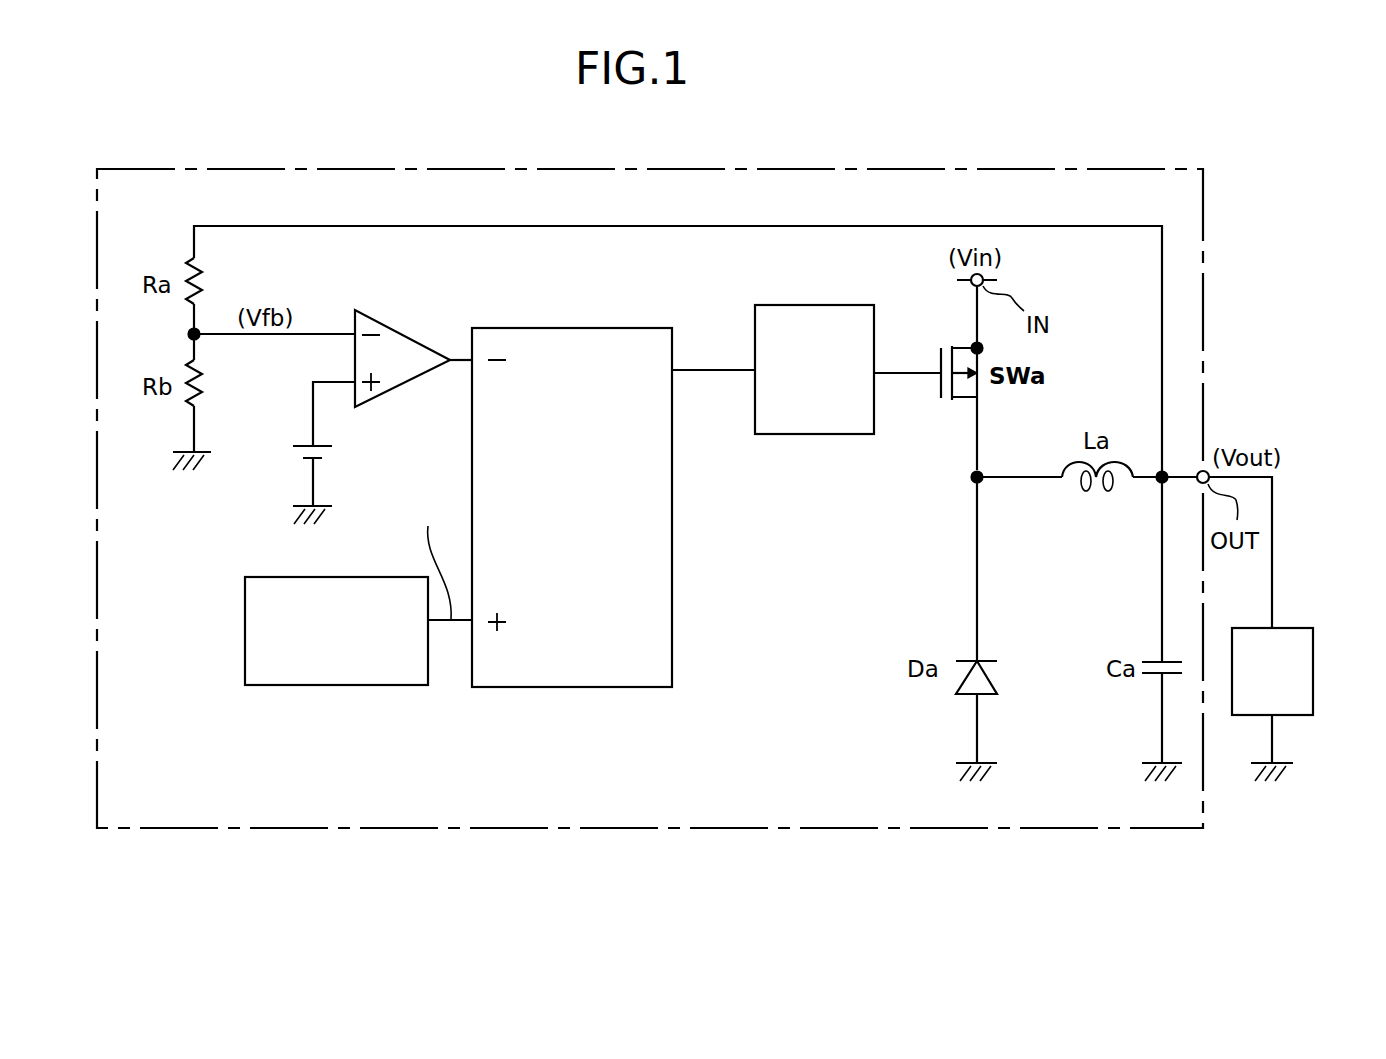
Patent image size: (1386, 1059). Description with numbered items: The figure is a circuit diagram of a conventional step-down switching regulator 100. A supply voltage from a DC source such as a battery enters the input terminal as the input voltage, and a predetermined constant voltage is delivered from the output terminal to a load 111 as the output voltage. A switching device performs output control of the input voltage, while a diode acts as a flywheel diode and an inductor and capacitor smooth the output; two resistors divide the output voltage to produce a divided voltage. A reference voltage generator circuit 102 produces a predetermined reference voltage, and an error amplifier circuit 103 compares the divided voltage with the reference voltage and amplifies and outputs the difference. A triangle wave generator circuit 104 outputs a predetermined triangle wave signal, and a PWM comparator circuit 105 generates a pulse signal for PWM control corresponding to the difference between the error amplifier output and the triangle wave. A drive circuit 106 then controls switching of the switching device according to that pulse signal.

The step-down switching regulator 100 is at (998, 170).
The reference voltage generator circuit 102 is at (303, 450).
The error amplifier circuit 103 is at (386, 320).
The triangle wave generator circuit 104 is at (300, 577).
The PWM comparator circuit 105 is at (593, 328).
The drive circuit 106 is at (856, 305).
The load 111 is at (1287, 628).